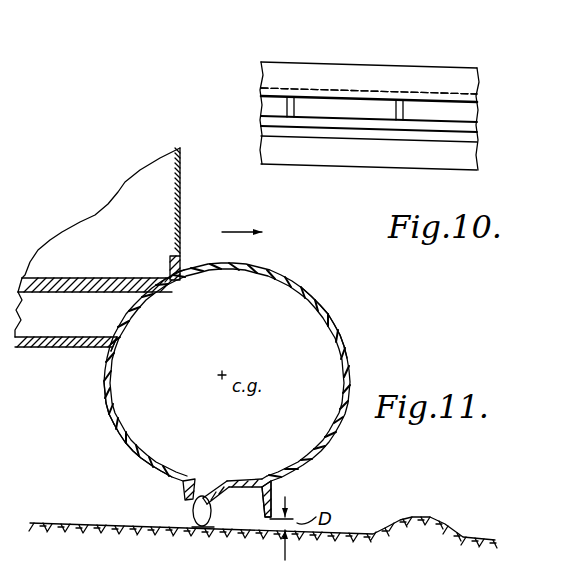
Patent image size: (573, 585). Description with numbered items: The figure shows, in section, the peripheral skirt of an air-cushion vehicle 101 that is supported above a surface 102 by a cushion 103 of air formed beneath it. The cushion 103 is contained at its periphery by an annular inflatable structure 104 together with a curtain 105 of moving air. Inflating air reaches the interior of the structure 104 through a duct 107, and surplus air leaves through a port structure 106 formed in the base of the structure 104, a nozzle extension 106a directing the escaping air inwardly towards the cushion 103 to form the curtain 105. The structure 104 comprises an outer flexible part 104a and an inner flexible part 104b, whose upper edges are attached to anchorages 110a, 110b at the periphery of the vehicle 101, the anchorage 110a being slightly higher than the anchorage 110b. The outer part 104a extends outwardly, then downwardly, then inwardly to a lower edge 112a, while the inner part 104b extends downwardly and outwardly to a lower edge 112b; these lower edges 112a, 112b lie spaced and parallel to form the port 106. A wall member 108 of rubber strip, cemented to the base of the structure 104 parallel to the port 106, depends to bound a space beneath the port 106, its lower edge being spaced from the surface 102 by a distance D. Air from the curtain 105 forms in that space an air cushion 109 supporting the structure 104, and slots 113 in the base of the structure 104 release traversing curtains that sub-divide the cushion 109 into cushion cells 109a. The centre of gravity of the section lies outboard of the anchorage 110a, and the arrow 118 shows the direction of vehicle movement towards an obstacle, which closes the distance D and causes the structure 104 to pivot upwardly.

In FIG. 11, the vehicle 101 is at (184, 163).
In FIG. 11, the surface 102 is at (67, 522).
In FIG. 11, the cushion of air 103 is at (44, 409).
In FIG. 10, the inflatable structure 104 is at (281, 63).
In FIG. 11, the inflatable structure 104 is at (353, 353).
In FIG. 11, the outer flexible part 104a is at (333, 318).
In FIG. 11, the inner flexible part 104b is at (123, 440).
In FIG. 11, the curtain of moving air 105 is at (193, 508).
In FIG. 11, the port structure 106 is at (210, 478).
In FIG. 10, the nozzle extension 106a is at (378, 125).
In FIG. 11, the nozzle extension 106a is at (198, 530).
In FIG. 11, the duct 107 is at (131, 313).
In FIG. 10, the wall member 108 is at (437, 92).
In FIG. 11, the wall member 108 is at (282, 496).
In FIG. 11, the air cushion 109 is at (205, 527).
In FIG. 10, the cushion cells 109a is at (415, 108).
In FIG. 11, the anchorage 110a is at (172, 292).
In FIG. 11, the anchorage 110b is at (112, 352).
In FIG. 11, the lower edge 112a is at (243, 480).
In FIG. 11, the lower edge 112b is at (194, 479).
In FIG. 10, the slots 113 is at (297, 106).
In FIG. 11, the arrow 118 is at (242, 218).